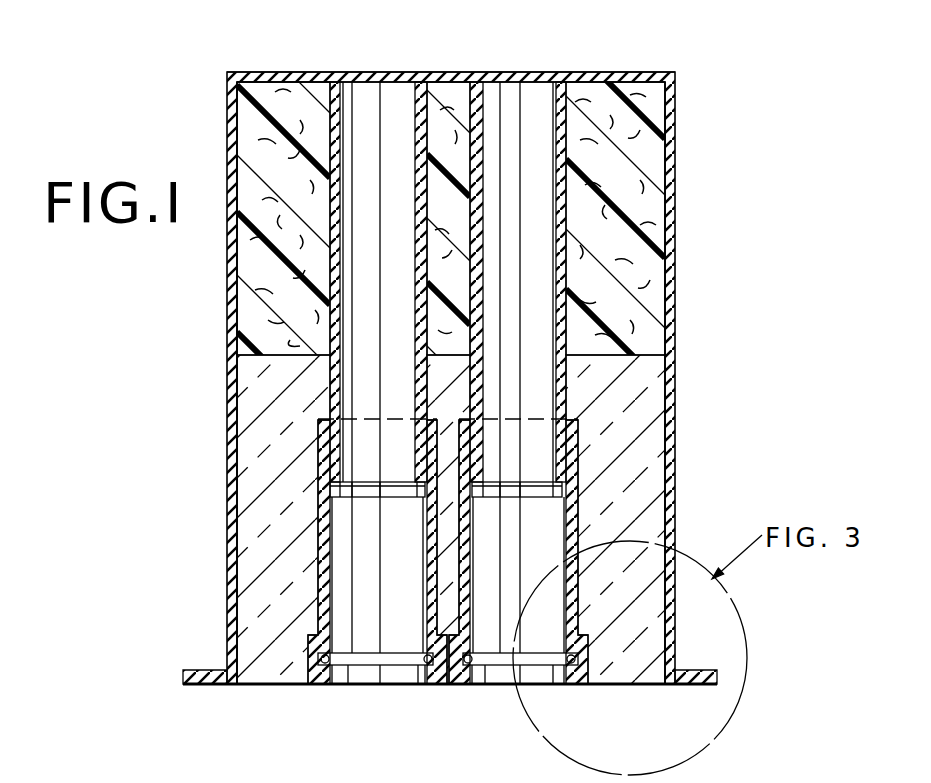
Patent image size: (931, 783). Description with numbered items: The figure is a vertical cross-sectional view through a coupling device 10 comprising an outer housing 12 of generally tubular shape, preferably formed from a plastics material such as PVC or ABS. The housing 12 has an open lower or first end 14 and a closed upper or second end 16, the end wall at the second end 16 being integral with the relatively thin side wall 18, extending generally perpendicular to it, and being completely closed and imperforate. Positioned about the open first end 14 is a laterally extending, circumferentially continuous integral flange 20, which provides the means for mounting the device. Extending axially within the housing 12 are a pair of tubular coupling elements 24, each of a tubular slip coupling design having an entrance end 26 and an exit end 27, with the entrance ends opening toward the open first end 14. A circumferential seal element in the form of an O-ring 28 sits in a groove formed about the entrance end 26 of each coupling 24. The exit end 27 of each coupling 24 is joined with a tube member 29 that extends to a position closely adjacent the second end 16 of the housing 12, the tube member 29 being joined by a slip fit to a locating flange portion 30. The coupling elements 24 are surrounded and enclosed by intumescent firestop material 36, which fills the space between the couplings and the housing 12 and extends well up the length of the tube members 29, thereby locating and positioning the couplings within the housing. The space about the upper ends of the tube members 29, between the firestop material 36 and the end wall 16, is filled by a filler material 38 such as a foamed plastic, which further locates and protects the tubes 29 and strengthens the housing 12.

The coupling device 10 is at (703, 197).
The outer housing 12 is at (676, 371).
The open first end 14 is at (259, 694).
The closed second end 16 is at (667, 68).
The side wall 18 is at (676, 484).
The mounting flange 20 is at (680, 686).
The tubular coupling element 24 is at (397, 688).
The entrance end 26 is at (488, 683).
The exit end 27 is at (407, 418).
The O-ring 28 is at (368, 658).
The tube member 29 is at (343, 468).
The locating flange portion 30 is at (398, 488).
The intumescent firestop material 36 is at (258, 513).
The filler material 38 is at (258, 263).